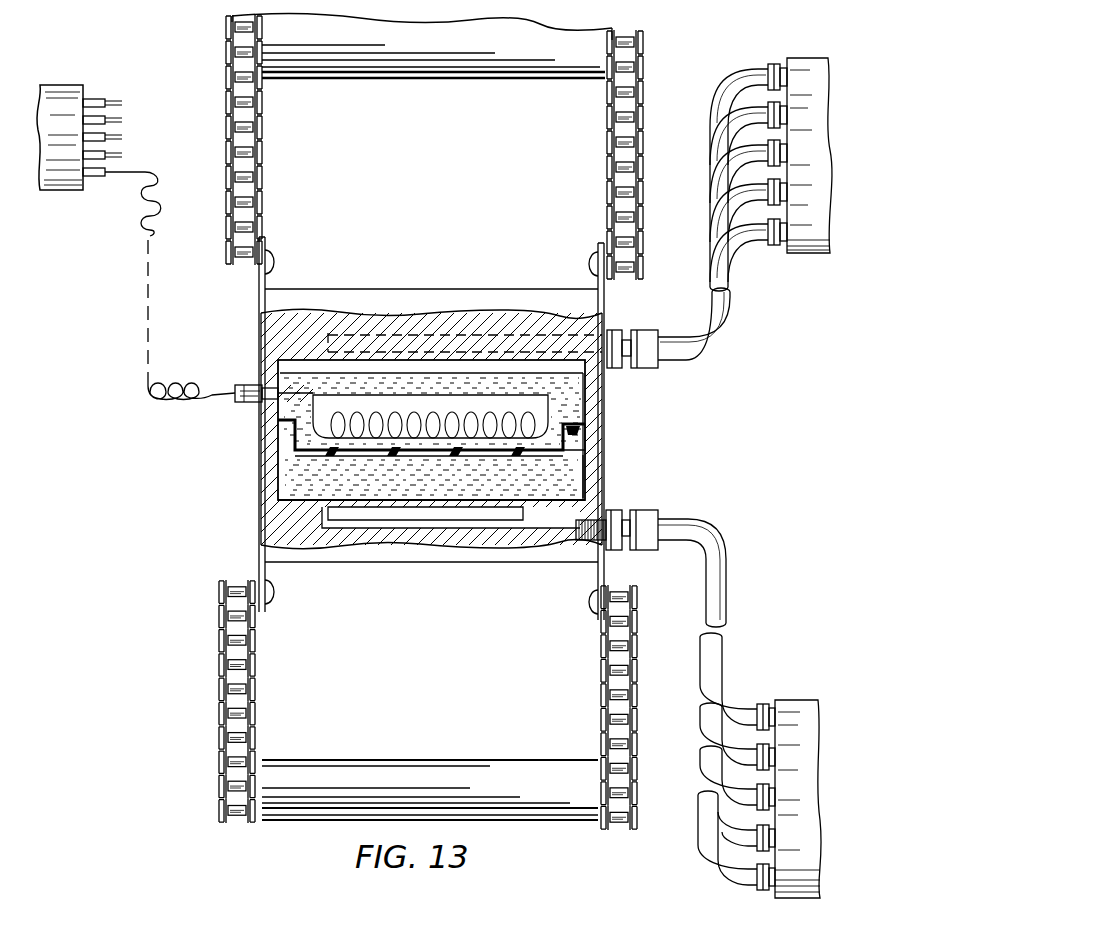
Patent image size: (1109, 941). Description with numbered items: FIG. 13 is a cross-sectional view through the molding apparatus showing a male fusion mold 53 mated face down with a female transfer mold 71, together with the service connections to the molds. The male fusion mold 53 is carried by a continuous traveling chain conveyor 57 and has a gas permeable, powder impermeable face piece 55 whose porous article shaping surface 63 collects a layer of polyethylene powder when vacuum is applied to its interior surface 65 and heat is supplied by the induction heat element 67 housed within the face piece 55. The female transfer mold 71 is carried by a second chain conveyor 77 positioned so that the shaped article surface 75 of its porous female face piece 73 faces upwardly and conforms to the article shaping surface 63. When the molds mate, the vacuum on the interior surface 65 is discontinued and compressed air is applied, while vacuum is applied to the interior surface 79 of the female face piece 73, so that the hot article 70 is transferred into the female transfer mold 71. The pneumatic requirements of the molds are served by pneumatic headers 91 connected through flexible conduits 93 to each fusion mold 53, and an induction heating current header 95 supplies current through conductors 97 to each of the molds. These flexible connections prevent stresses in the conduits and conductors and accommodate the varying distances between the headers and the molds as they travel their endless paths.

The male fusion mold 53 is at (262, 299).
The face piece 55 is at (578, 411).
The chain conveyor 57 is at (640, 155).
The article shaping surface 63 is at (583, 434).
The interior surface 65 is at (618, 370).
The induction heat element 67 is at (272, 420).
The article 70 is at (292, 455).
The female transfer mold 71 is at (258, 548).
The female face piece 73 is at (283, 477).
The shaped article surface 75 is at (585, 476).
The chain conveyor 77 is at (637, 683).
The interior surface 79 is at (585, 503).
The pneumatic header 91 is at (803, 252).
The flexible conduit 93 is at (706, 318).
The induction heating current header 95 is at (74, 192).
The conductor 97 is at (111, 101).